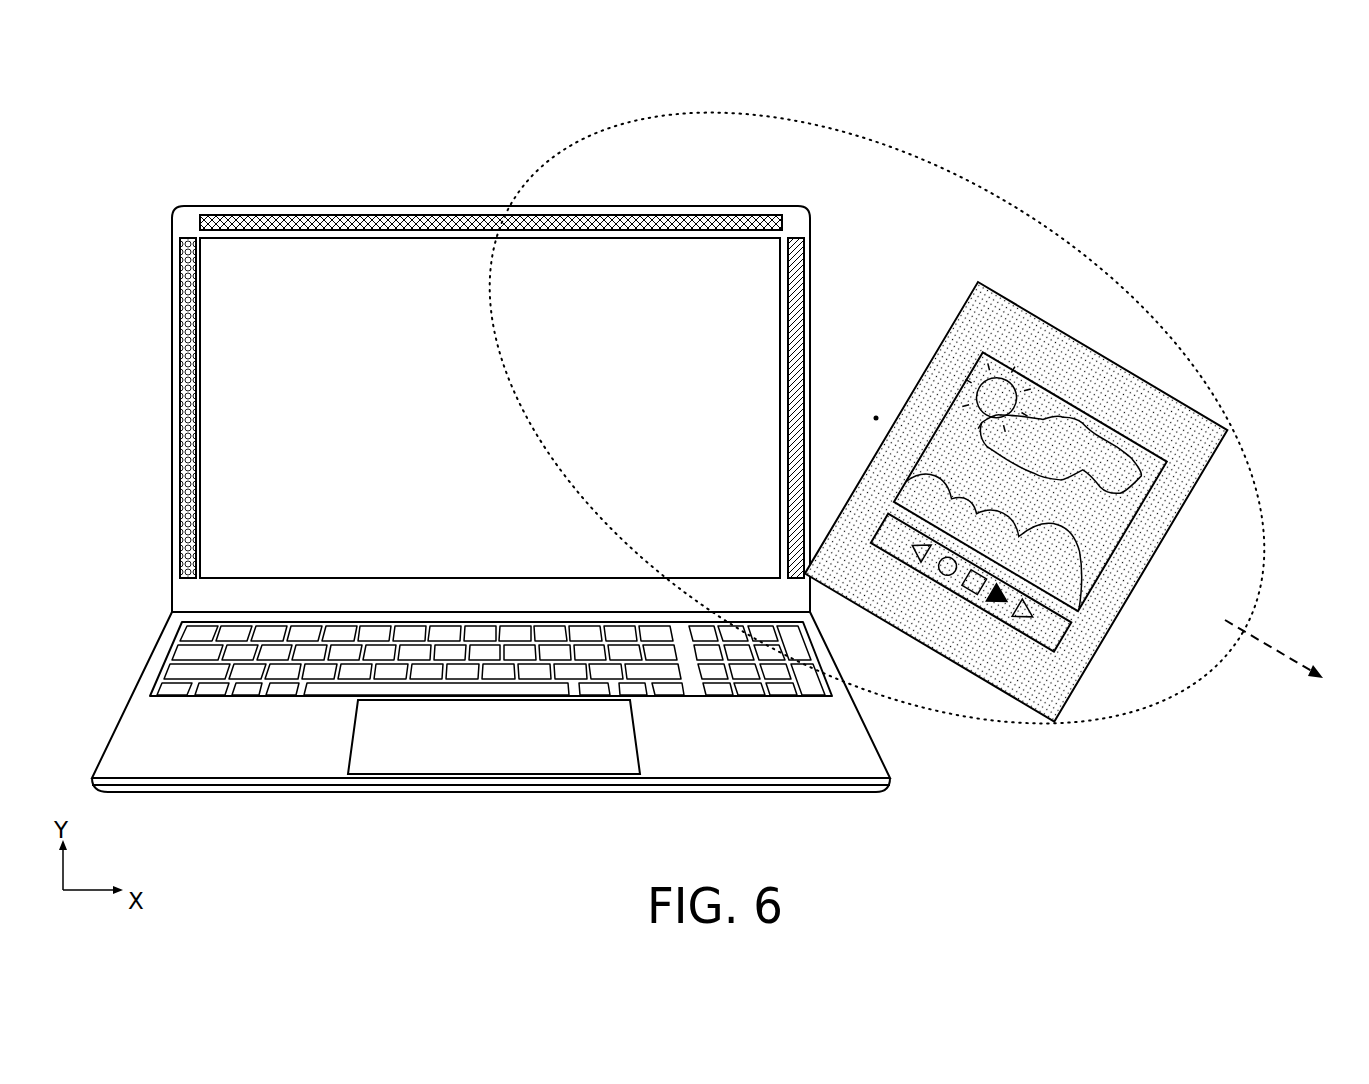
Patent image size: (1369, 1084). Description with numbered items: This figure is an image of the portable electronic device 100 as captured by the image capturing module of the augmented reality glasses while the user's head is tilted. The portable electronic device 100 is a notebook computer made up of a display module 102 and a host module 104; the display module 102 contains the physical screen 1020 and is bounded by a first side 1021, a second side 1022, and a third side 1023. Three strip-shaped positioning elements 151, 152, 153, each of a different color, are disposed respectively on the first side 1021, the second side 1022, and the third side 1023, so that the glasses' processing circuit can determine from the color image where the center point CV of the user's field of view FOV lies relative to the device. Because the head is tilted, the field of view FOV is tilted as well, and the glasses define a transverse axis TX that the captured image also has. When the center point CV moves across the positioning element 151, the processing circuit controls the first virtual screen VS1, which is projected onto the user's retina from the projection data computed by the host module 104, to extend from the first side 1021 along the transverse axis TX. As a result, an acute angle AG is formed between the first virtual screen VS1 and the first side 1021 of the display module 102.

The portable electronic device 100 is at (170, 184).
The display module 102 is at (168, 278).
The host module 104 is at (128, 748).
The physical screen 1020 is at (255, 334).
The first side 1021 is at (812, 268).
The second side 1022 is at (428, 212).
The third side 1023 is at (172, 396).
The positioning element 151 is at (795, 238).
The positioning element 152 is at (562, 222).
The positioning element 153 is at (188, 475).
The center point CV is at (873, 415).
The acute angle AG is at (859, 483).
The field of view FOV is at (1008, 197).
The first virtual screen VS1 is at (1178, 520).
The transverse axis TX is at (1290, 662).